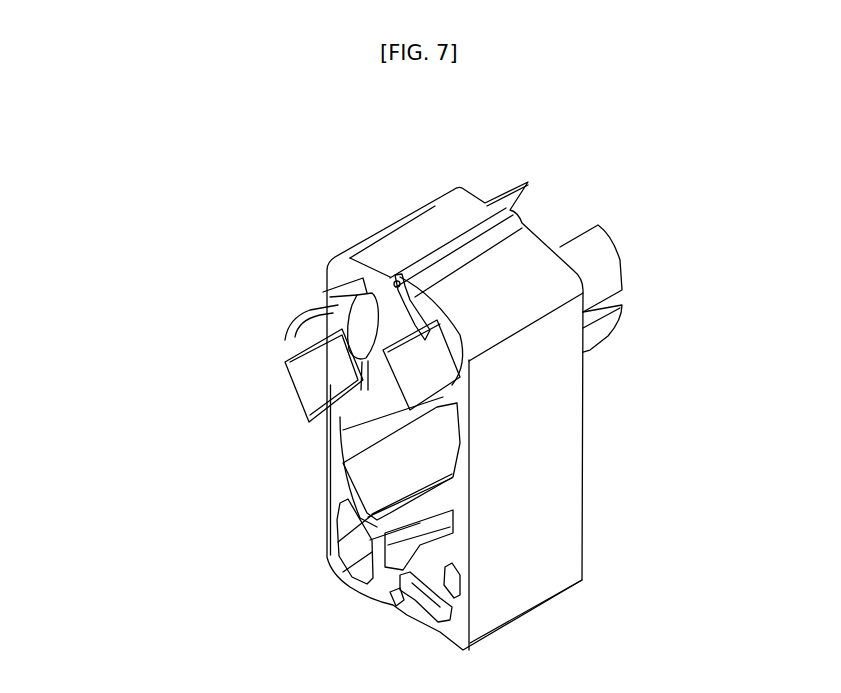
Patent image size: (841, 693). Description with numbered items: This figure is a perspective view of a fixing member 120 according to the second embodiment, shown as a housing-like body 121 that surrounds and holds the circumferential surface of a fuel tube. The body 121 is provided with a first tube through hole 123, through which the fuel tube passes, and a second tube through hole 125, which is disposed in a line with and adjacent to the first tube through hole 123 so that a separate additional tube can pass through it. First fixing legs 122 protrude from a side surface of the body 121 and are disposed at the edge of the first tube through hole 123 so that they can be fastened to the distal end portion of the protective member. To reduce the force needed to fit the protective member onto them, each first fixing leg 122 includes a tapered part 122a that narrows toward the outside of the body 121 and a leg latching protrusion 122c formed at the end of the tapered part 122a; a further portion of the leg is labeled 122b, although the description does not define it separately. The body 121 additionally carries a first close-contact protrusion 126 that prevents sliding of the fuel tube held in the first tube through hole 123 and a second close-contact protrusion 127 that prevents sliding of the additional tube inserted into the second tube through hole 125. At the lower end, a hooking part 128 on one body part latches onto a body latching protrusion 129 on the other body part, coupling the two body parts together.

The fixing member 120 is at (316, 233).
The body 121 is at (411, 222).
The first fixing legs 122 is at (540, 181).
The tapered part 122a is at (327, 297).
The second hook 122b is at (303, 340).
The leg latching protrusion 122c is at (330, 365).
The first tube through hole 123 is at (385, 408).
The second tube through hole 125 is at (450, 515).
The first close-contact protrusion 126 is at (410, 328).
The second close-contact protrusion 127 is at (380, 442).
The hooking part 128 is at (413, 598).
The body latching protrusion 129 is at (433, 600).